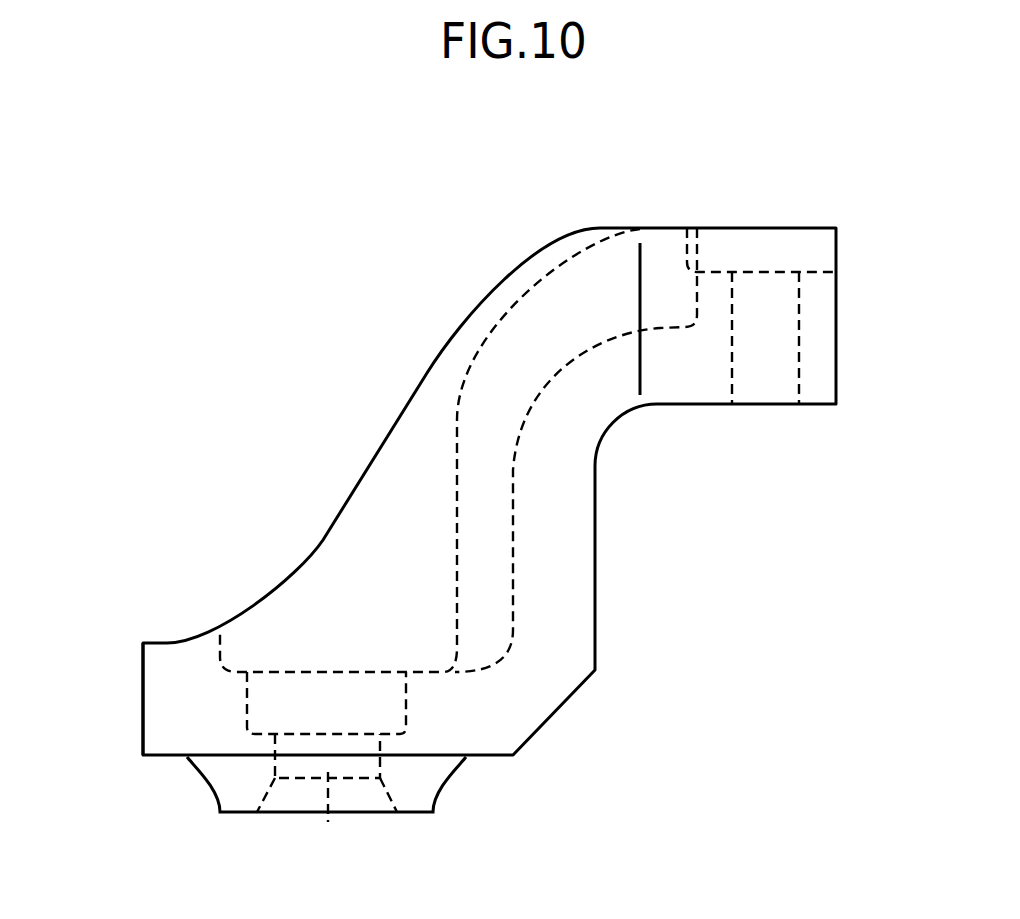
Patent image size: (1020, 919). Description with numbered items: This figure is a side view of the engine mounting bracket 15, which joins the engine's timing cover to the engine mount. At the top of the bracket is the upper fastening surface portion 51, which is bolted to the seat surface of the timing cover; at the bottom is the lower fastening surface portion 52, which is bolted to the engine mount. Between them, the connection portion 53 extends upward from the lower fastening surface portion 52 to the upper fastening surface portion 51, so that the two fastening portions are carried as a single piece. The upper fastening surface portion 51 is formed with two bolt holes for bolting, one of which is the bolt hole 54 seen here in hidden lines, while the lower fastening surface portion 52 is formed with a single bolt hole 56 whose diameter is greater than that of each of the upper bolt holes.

The mounting bracket 15 is at (353, 387).
The upper fastening surface portion 51 is at (823, 324).
The lower fastening surface portion 52 is at (145, 659).
The connection portion 53 is at (587, 560).
The bolt hole 54 is at (777, 298).
The bolt hole 56 is at (327, 824).